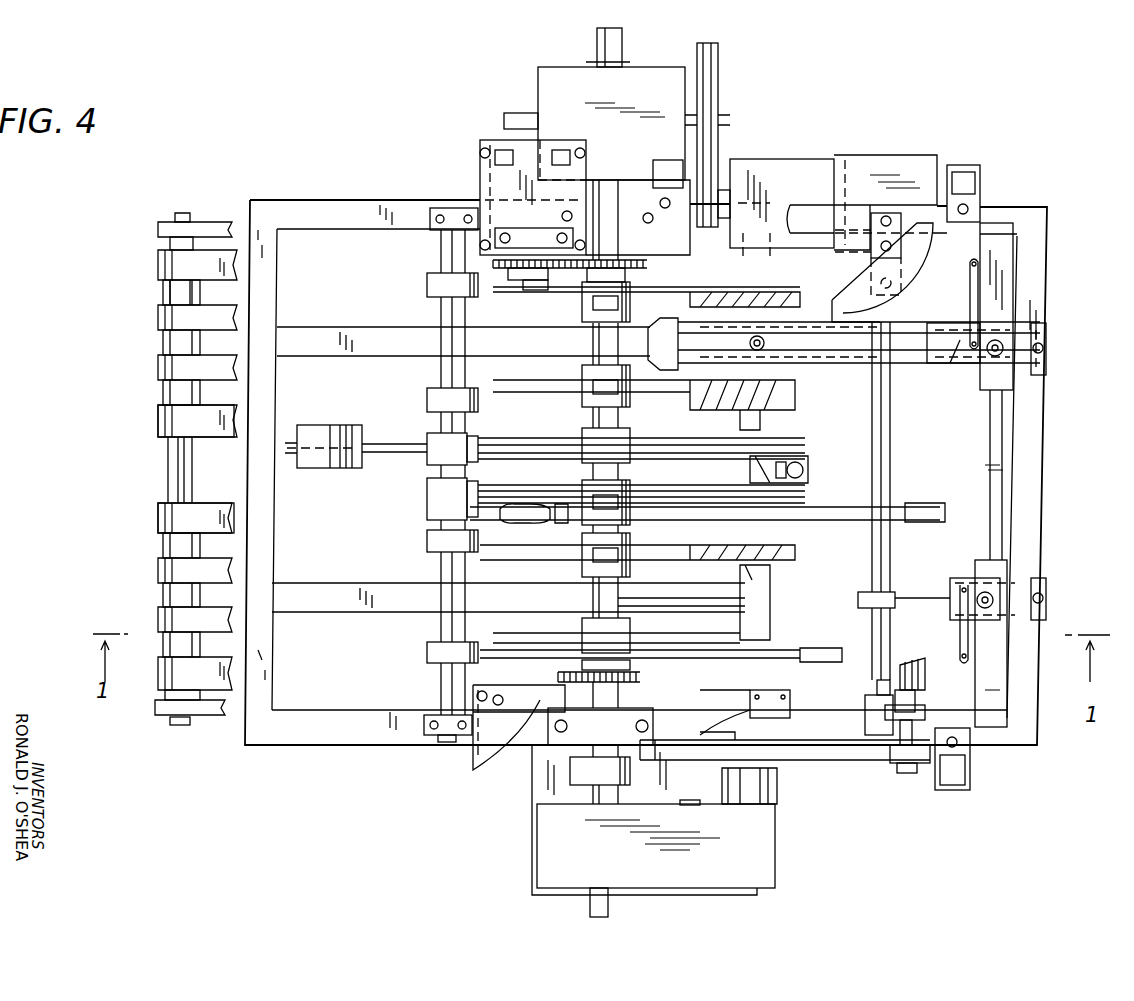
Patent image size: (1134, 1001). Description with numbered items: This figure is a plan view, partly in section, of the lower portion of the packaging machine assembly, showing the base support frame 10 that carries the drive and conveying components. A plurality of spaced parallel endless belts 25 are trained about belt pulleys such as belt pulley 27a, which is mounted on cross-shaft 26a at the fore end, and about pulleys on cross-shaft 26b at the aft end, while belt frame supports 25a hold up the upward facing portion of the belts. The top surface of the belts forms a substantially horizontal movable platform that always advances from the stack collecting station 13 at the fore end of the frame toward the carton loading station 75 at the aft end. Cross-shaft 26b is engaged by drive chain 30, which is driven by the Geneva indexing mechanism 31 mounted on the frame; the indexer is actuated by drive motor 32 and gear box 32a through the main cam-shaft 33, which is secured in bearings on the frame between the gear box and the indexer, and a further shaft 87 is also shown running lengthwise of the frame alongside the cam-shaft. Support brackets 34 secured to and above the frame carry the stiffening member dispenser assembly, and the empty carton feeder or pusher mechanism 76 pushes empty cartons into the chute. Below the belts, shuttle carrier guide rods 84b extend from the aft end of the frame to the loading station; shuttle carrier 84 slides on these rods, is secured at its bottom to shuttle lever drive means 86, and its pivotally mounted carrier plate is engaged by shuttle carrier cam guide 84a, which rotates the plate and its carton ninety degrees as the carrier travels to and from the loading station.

The base support frame 10 is at (337, 212).
The stack collecting station 13 is at (317, 315).
The endless belts 25 is at (165, 418).
The belt frame supports 25a is at (343, 352).
The cross-shaft 26a is at (170, 343).
The cross-shaft 26b is at (926, 706).
The belt pulley 27a is at (165, 297).
The drive chain 30 is at (857, 756).
The Geneva indexing mechanism 31 is at (770, 834).
The drive motor 32 is at (895, 162).
The gear box 32a is at (660, 72).
The main cam-shaft 33 is at (616, 412).
The support brackets 34 is at (483, 152).
The carton loading station 75 is at (924, 470).
The pusher mechanism 76 is at (1022, 198).
The shuttle carrier 84 is at (955, 353).
The shuttle carrier cam guide 84a is at (908, 290).
The guide rods 84b is at (852, 370).
The shuttle lever drive means 86 is at (888, 552).
The shaft 87 is at (440, 306).